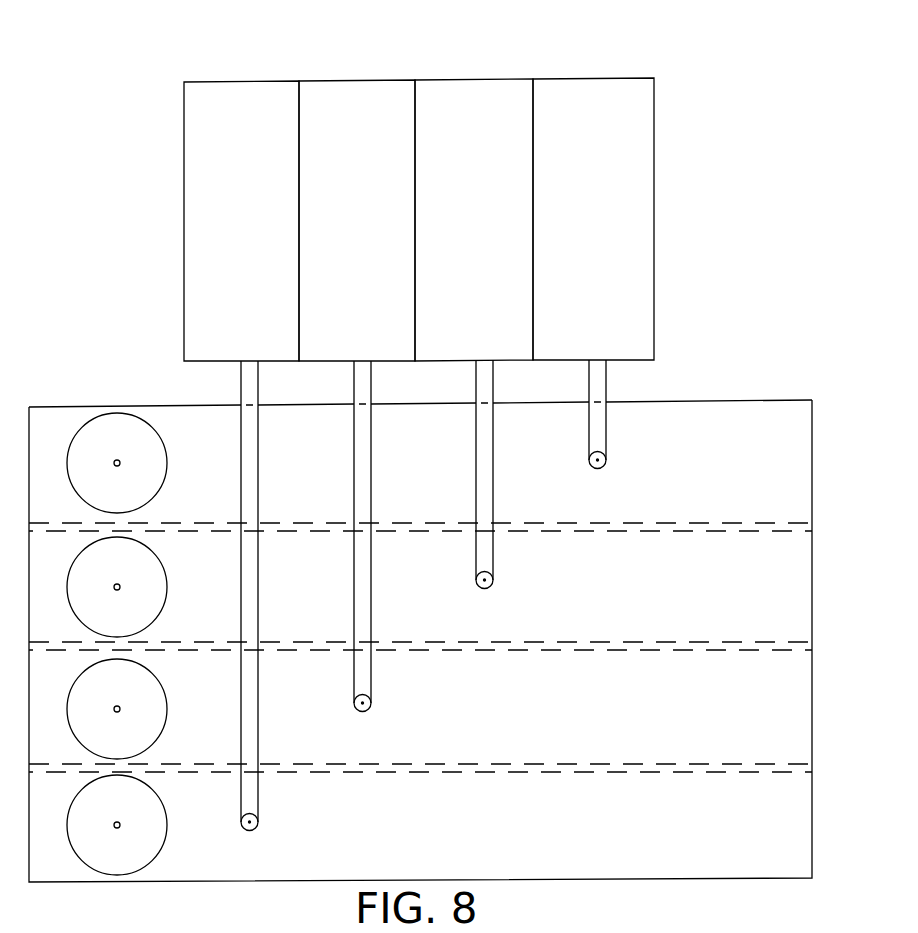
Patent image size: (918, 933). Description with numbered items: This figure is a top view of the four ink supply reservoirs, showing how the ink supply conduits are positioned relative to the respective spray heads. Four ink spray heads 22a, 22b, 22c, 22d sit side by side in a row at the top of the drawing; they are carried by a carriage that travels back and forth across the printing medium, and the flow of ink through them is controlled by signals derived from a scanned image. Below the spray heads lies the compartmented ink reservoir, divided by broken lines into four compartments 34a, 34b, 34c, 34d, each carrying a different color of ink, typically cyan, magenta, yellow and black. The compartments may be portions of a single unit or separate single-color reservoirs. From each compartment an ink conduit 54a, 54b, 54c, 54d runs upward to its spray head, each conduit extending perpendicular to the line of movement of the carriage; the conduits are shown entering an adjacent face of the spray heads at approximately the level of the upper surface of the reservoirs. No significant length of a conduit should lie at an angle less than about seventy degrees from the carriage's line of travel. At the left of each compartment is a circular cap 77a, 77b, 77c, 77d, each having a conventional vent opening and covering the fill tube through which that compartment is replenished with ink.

The ink spray head 22a is at (685, 42).
The ink spray head 22b is at (540, 42).
The ink spray head 22c is at (418, 42).
The ink spray head 22d is at (223, 68).
The ink reservoir compartment 34a is at (864, 430).
The ink reservoir compartment 34b is at (864, 561).
The ink reservoir compartment 34c is at (864, 675).
The ink reservoir compartment 34d is at (870, 796).
The ink conduit 54a is at (606, 444).
The ink conduit 54b is at (493, 497).
The ink conduit 54c is at (371, 612).
The ink conduit 54d is at (259, 745).
The cap 77a is at (167, 460).
The cap 77b is at (167, 598).
The cap 77c is at (165, 731).
The cap 77d is at (167, 846).